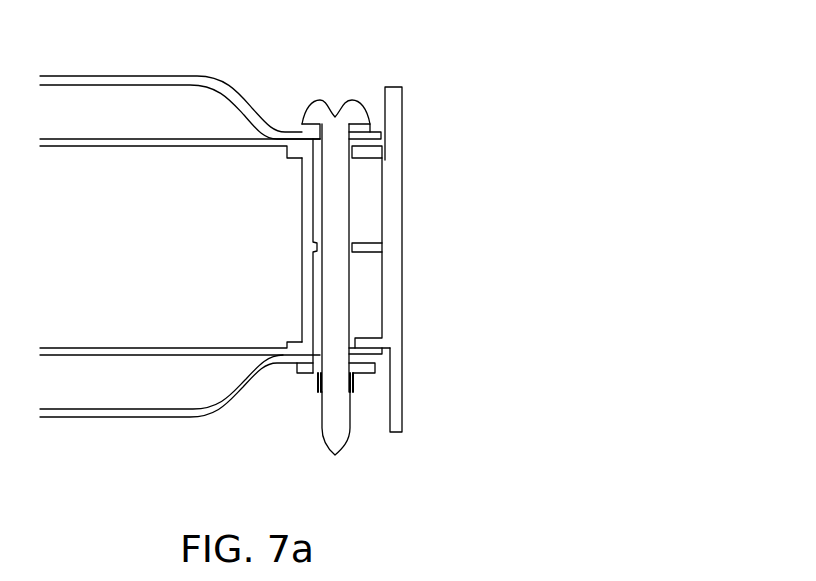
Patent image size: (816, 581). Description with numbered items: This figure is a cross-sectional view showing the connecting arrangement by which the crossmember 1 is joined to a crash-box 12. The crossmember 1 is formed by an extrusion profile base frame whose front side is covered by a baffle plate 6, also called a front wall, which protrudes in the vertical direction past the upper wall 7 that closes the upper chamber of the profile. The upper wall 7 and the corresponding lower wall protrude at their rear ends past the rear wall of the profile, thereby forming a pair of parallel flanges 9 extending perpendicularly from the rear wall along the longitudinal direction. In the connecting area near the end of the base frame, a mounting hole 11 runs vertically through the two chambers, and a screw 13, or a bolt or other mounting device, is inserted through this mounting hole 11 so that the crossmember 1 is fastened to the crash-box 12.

The crash-box 12 is at (132, 72).
The crossmember 1 is at (335, 73).
The upper wall 7 is at (300, 155).
The screw 13 is at (345, 183).
The baffle plate 6 is at (428, 283).
The mounting hole 11 is at (313, 375).
The flange 9 is at (361, 374).